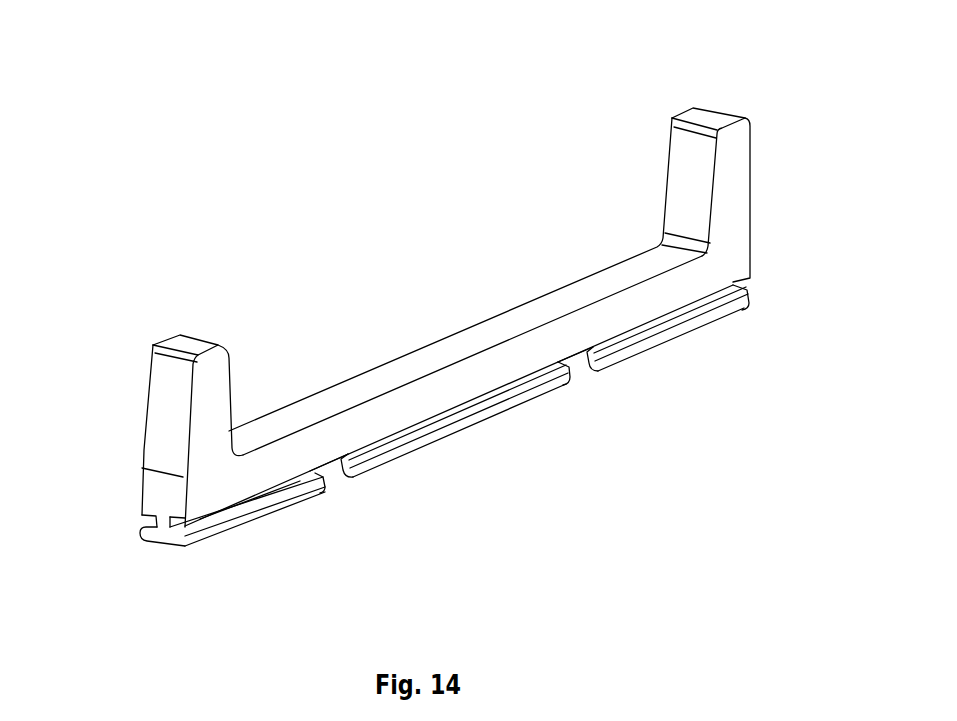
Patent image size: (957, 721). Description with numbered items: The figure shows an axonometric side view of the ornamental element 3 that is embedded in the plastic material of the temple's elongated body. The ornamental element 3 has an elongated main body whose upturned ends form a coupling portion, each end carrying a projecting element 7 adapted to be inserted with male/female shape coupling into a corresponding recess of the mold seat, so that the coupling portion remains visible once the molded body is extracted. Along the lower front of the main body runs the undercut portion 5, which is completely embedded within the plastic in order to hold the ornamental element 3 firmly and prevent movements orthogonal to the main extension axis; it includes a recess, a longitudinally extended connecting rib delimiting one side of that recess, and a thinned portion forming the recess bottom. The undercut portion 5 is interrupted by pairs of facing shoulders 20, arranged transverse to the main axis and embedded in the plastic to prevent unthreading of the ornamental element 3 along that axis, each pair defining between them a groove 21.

The ornamental element 3 is at (424, 263).
The projecting element 7 is at (180, 333).
The undercut portion 5 is at (401, 481).
The shoulder 20 is at (596, 360).
The groove 21 is at (337, 482).